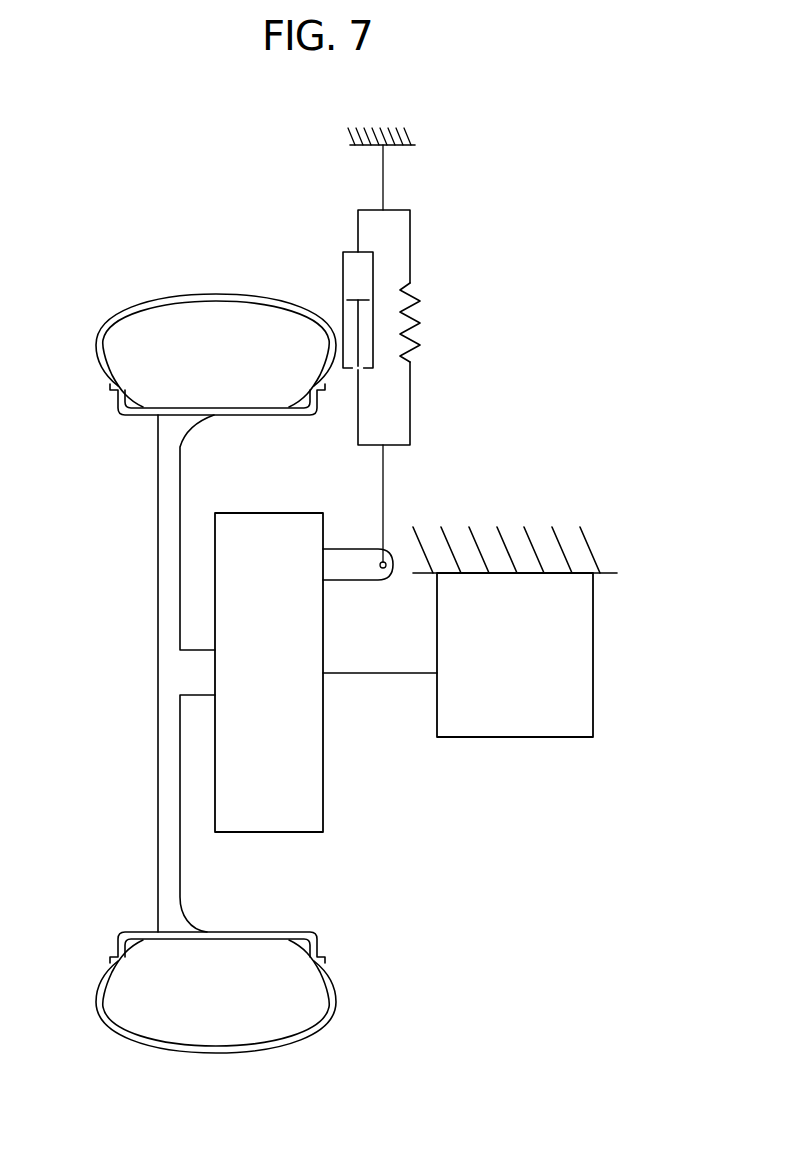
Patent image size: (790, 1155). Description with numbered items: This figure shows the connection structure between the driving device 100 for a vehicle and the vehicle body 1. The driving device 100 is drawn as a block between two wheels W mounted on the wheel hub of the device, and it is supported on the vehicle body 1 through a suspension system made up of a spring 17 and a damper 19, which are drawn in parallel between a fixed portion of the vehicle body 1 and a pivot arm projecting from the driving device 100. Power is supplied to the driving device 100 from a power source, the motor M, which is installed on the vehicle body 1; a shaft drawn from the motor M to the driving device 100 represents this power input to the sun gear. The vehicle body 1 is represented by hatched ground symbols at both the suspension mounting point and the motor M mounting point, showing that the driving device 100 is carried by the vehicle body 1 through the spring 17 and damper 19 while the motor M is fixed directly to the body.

The vehicle body 1 is at (415, 133).
The spring 17 is at (416, 327).
The damper 19 is at (336, 260).
The driving device 100 is at (238, 765).
The wheel W is at (168, 303).
The motor M is at (582, 663).